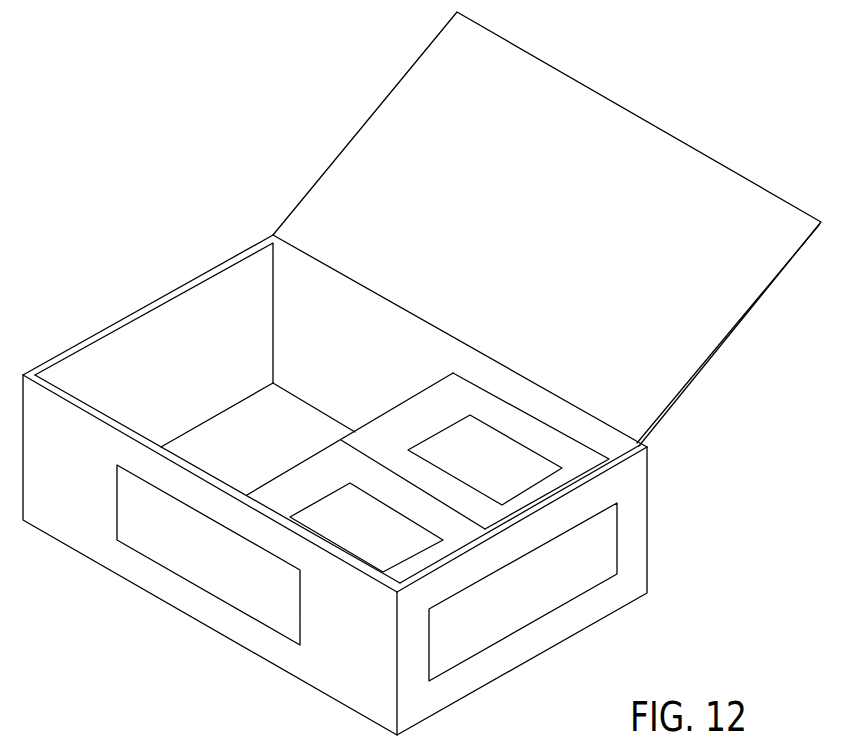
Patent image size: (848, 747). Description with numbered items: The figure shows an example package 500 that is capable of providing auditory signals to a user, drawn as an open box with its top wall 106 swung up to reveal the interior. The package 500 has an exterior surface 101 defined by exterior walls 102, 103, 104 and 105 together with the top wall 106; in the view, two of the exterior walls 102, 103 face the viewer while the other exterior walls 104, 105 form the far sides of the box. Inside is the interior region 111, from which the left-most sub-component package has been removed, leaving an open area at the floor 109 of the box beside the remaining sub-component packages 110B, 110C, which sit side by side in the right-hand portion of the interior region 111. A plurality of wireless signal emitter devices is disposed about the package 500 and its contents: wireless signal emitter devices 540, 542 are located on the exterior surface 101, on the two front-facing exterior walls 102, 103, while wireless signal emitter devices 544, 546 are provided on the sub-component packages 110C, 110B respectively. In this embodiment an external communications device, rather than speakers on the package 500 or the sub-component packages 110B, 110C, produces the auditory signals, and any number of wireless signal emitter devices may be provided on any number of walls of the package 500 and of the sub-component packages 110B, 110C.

The package 500 is at (118, 163).
The exterior surface 101 is at (62, 347).
The exterior wall 102 is at (83, 542).
The exterior wall 103 is at (492, 670).
The exterior wall 104 is at (396, 313).
The exterior wall 105 is at (222, 258).
The top wall 106 is at (360, 130).
The floor 109 is at (247, 456).
The sub-component package 110B is at (482, 387).
The sub-component package 110C is at (349, 472).
The interior region 111 is at (183, 340).
The wireless signal emitter device 540 is at (223, 600).
The wireless signal emitter device 542 is at (573, 600).
The wireless signal emitter device 544 is at (330, 492).
The wireless signal emitter device 546 is at (525, 447).